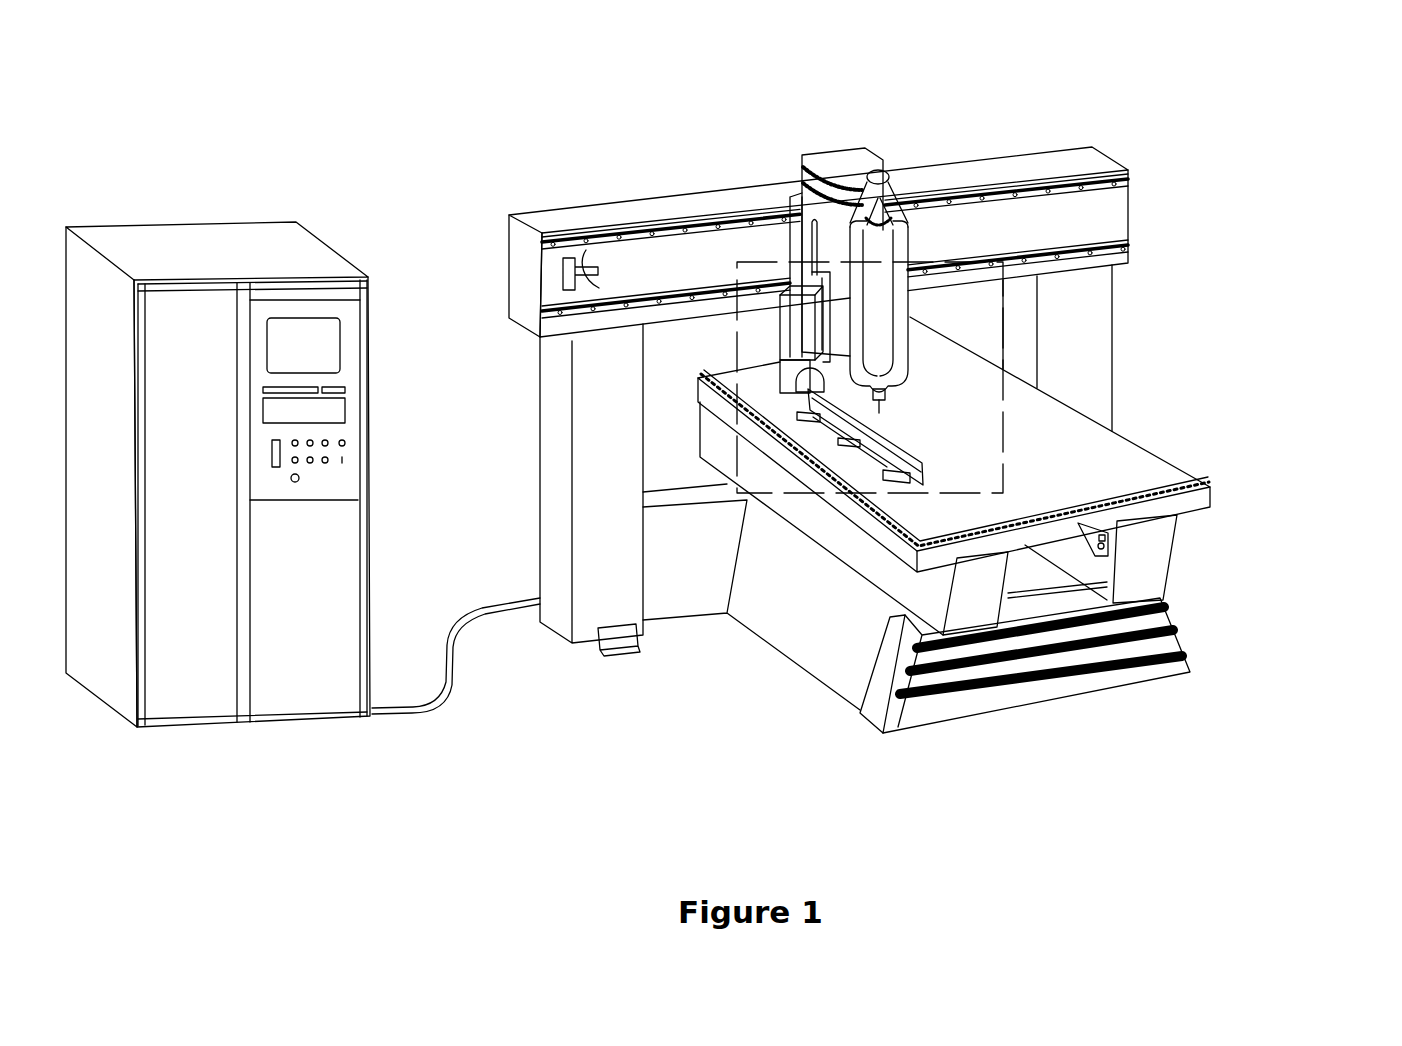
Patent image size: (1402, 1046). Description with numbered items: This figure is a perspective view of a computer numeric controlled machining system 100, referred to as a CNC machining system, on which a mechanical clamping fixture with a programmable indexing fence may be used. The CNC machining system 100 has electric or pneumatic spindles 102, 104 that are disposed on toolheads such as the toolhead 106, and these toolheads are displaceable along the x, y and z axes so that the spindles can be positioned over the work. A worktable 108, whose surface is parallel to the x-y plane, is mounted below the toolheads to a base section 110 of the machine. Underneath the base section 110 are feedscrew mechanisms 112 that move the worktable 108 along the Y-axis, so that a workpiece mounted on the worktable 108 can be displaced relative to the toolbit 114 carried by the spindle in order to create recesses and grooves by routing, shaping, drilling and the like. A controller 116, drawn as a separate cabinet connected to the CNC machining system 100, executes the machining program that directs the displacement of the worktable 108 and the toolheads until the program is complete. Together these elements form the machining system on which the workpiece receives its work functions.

The CNC machining system 100 is at (1065, 167).
The spindle 102 is at (898, 391).
The spindle 104 is at (781, 370).
The toolhead 106 is at (778, 322).
The worktable 108 is at (1142, 447).
The base section 110 is at (1172, 565).
The feedscrew mechanism 112 is at (1112, 538).
The toolbit 114 is at (887, 403).
The controller 116 is at (205, 245).